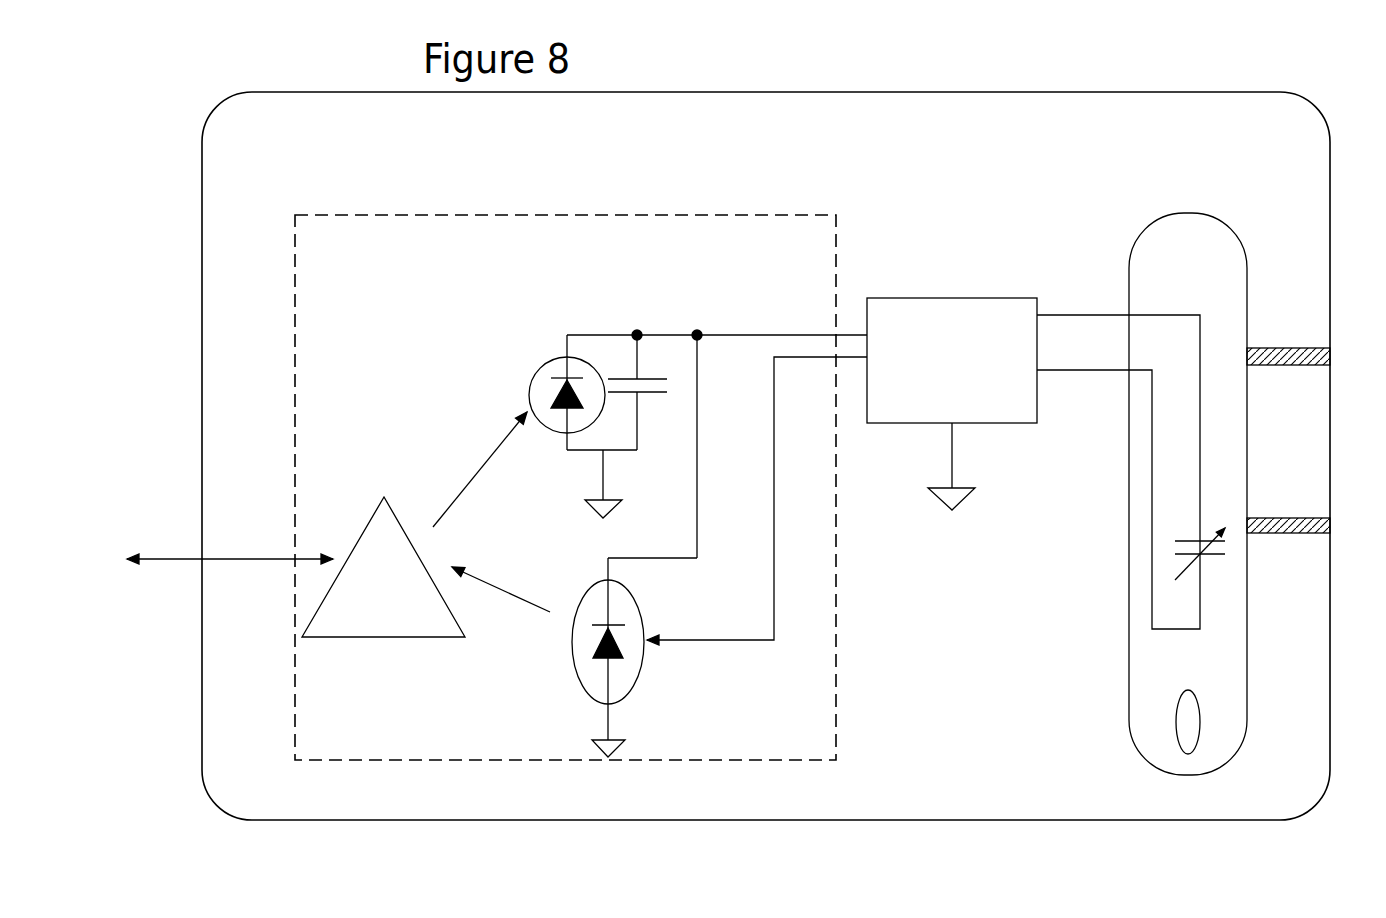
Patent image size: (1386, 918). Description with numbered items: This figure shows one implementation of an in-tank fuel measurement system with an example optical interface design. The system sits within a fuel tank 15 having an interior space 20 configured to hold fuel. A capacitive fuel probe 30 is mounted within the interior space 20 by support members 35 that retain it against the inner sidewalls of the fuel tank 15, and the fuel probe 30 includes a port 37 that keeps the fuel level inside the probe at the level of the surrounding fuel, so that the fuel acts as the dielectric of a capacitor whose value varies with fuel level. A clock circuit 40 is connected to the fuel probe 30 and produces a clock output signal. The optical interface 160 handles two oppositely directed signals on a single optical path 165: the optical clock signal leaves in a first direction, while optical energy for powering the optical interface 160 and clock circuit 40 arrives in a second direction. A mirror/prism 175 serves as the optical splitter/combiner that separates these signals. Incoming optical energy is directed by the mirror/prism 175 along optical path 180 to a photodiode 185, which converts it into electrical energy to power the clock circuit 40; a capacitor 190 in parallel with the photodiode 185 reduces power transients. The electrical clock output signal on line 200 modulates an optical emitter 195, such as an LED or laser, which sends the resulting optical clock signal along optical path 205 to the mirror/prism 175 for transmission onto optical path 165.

The fuel tank 15 is at (964, 92).
The interior space 20 is at (1007, 677).
The capacitive fuel probe 30 is at (1142, 494).
The support members 35 is at (1312, 347).
The port 37 is at (1192, 725).
The clock circuit 40 is at (952, 404).
The optical interface 160 is at (377, 266).
The optical path 165 is at (232, 558).
The mirror/prism 175 is at (383, 567).
The optical path 180 is at (478, 465).
The photodiode 185 is at (528, 373).
The capacitor 190 is at (645, 370).
The optical emitter 195 is at (580, 590).
The line 200 is at (773, 618).
The optical path 205 is at (502, 588).